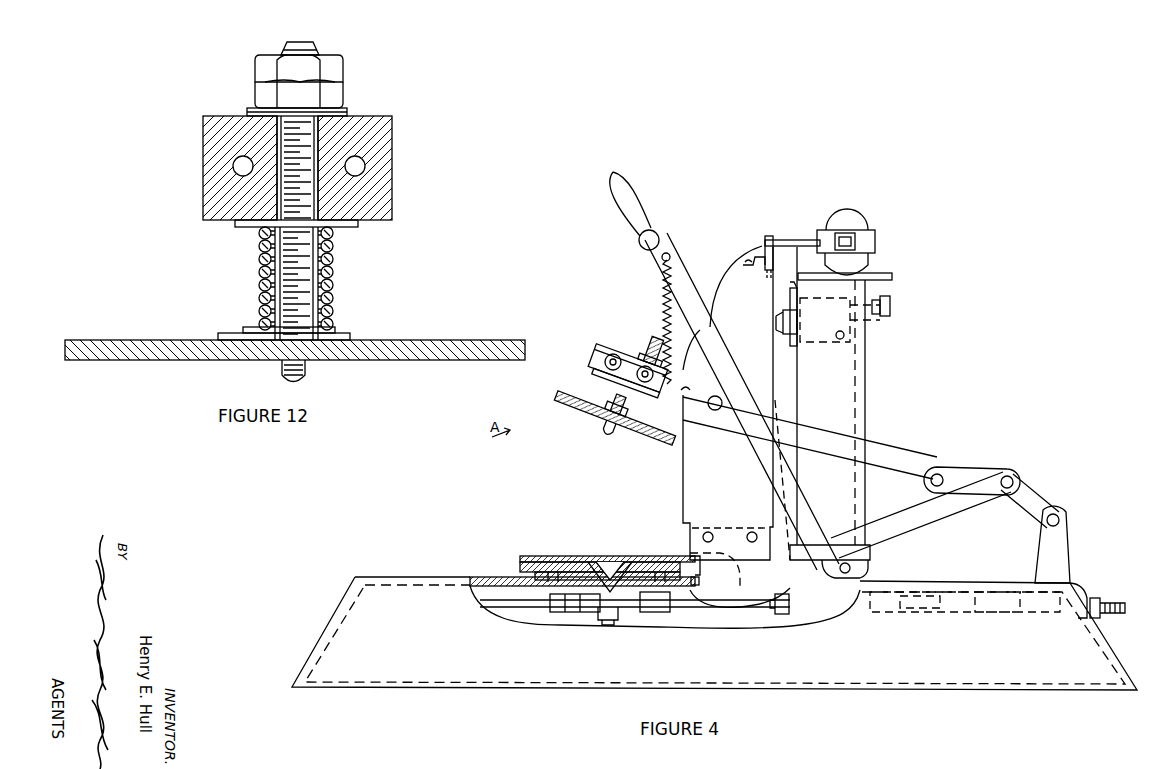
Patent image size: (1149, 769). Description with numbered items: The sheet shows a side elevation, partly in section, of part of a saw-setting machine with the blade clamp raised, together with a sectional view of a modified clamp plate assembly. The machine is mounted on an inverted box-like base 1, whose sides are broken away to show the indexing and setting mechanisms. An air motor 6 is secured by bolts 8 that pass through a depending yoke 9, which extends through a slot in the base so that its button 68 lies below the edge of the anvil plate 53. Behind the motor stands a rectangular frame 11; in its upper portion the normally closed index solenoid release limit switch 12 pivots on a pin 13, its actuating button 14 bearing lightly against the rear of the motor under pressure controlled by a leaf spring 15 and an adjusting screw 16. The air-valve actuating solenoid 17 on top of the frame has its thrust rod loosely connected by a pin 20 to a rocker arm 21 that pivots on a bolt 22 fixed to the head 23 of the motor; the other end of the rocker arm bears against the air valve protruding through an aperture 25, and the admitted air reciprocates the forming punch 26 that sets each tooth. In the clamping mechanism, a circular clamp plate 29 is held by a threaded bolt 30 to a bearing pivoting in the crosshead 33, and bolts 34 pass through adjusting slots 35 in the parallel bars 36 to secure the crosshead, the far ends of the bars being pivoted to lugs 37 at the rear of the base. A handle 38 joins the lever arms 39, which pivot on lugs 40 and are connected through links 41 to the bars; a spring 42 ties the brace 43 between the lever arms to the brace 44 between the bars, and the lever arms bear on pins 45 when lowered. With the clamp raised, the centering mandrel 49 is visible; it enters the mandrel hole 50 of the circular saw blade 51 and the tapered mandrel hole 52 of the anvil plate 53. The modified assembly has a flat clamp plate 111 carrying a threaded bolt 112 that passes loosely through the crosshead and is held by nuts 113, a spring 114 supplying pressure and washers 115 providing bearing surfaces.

In FIG. 4, the base 1 is at (1108, 650).
In FIG. 4, the air motor 6 is at (713, 466).
In FIG. 4, the bolts 8 is at (750, 532).
In FIG. 4, the yoke 9 is at (722, 595).
In FIG. 4, the frame 11 is at (866, 373).
In FIG. 4, the index solenoid release limit switch 12 is at (852, 324).
In FIG. 4, the pin 13 is at (845, 336).
In FIG. 4, the actuating button 14 is at (778, 322).
In FIG. 4, the leaf spring 15 is at (793, 283).
In FIG. 4, the adjusting screw 16 is at (886, 303).
In FIG. 4, the air-valve actuating solenoid 17 is at (872, 236).
In FIG. 4, the pin 20 is at (856, 241).
In FIG. 4, the rocker arm 21 is at (790, 240).
In FIG. 4, the bolt 22 is at (765, 238).
In FIG. 4, the head 23 is at (718, 305).
In FIG. 4, the aperture 25 is at (745, 262).
In FIG. 4, the forming punch 26 is at (692, 558).
In FIG. 4, the clamp plate 29 is at (555, 398).
In FIG. 4, the threaded bolt 30 is at (636, 328).
In FIG. 12, the crosshead 33 is at (210, 148).
In FIG. 4, the crosshead 33 is at (608, 352).
In FIG. 4, the bolts 34 is at (605, 362).
In FIG. 4, the slots 35 is at (602, 384).
In FIG. 4, the parallel bars 36 is at (866, 463).
In FIG. 4, the lugs 37 is at (1058, 538).
In FIG. 4, the handle 38 is at (617, 180).
In FIG. 4, the lever arms 39 is at (662, 250).
In FIG. 4, the lugs 40 is at (852, 569).
In FIG. 4, the links 41 is at (975, 474).
In FIG. 4, the spring 42 is at (662, 297).
In FIG. 4, the brace 43 is at (660, 259).
In FIG. 4, the brace 44 is at (686, 391).
In FIG. 4, the pins 45 is at (715, 410).
In FIG. 12, the centering mandrel 49 is at (298, 370).
In FIG. 4, the centering mandrel 49 is at (605, 430).
In FIG. 4, the mandrel hole 50 is at (612, 562).
In FIG. 4, the circular saw blade 51 is at (522, 558).
In FIG. 4, the tapered mandrel hole 52 is at (608, 562).
In FIG. 4, the anvil plate 53 is at (520, 566).
In FIG. 4, the button 68 is at (694, 586).
In FIG. 12, the clamp plate 111 is at (460, 345).
In FIG. 12, the threaded bolt 112 is at (318, 48).
In FIG. 12, the nuts 113 is at (335, 90).
In FIG. 12, the spring 114 is at (330, 294).
In FIG. 12, the washers 115 is at (250, 111).